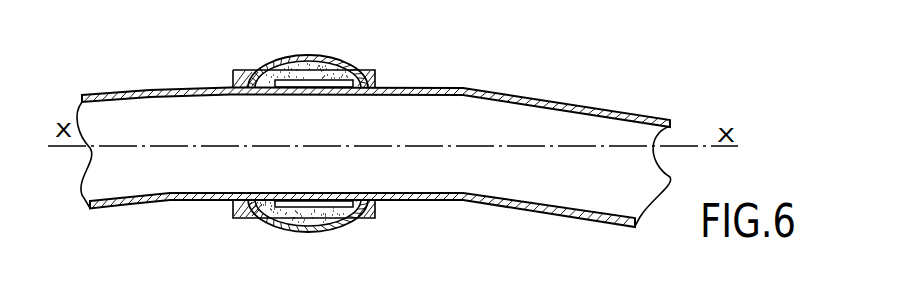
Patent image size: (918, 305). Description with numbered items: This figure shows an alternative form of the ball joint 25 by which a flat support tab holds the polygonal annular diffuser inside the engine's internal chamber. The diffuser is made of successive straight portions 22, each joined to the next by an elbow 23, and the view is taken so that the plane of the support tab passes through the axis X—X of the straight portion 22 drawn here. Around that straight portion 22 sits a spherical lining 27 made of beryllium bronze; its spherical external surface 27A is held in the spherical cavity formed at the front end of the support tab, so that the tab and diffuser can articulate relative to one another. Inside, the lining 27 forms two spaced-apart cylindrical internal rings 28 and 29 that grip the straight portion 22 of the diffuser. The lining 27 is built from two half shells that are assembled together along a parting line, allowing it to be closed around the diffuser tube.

The straight portion 22 is at (97, 94).
The elbow 23 is at (142, 91).
The ball joint 25 is at (258, 63).
The spherical external surface 27A is at (296, 55).
The spherical lining 27 is at (273, 225).
The cylindrical internal ring 28 is at (254, 92).
The cylindrical internal ring 29 is at (358, 193).